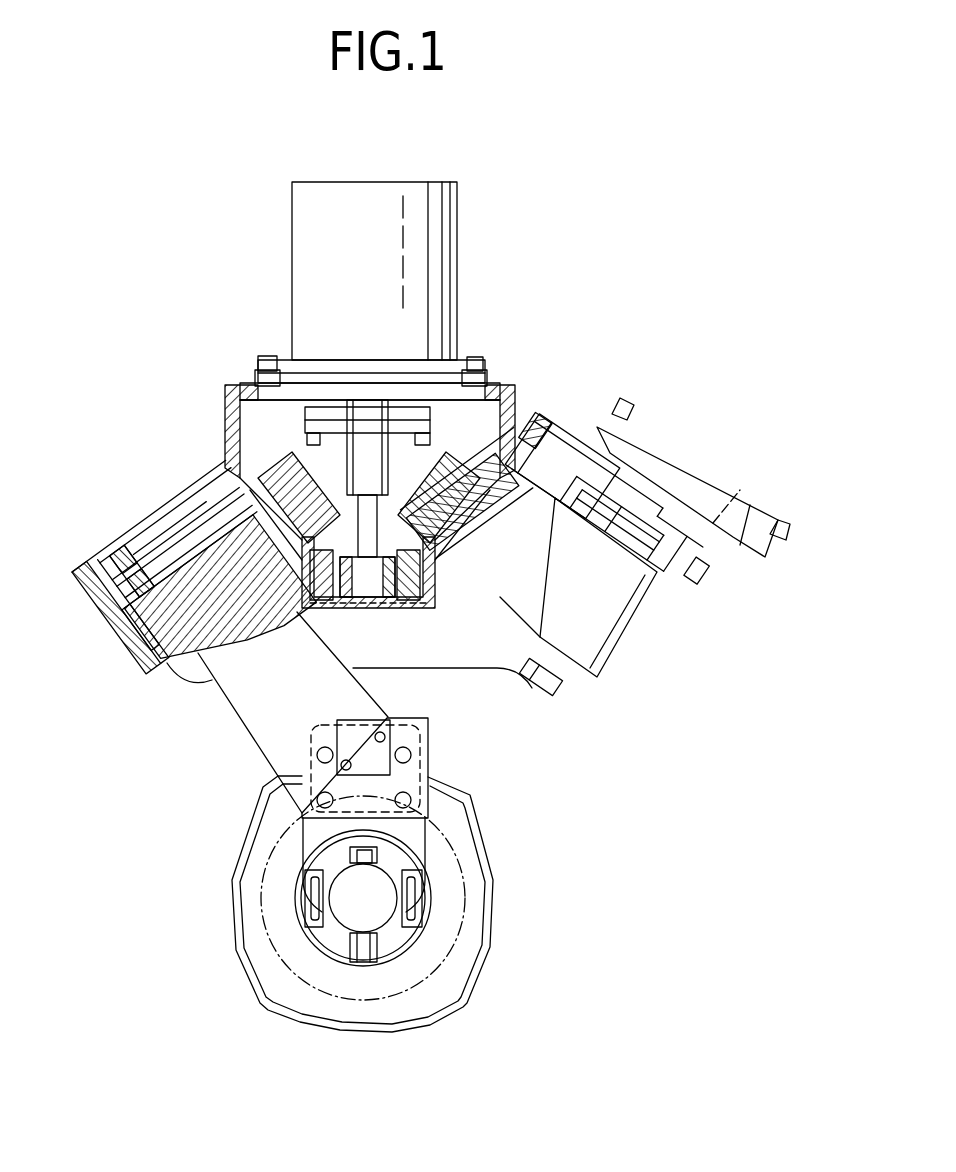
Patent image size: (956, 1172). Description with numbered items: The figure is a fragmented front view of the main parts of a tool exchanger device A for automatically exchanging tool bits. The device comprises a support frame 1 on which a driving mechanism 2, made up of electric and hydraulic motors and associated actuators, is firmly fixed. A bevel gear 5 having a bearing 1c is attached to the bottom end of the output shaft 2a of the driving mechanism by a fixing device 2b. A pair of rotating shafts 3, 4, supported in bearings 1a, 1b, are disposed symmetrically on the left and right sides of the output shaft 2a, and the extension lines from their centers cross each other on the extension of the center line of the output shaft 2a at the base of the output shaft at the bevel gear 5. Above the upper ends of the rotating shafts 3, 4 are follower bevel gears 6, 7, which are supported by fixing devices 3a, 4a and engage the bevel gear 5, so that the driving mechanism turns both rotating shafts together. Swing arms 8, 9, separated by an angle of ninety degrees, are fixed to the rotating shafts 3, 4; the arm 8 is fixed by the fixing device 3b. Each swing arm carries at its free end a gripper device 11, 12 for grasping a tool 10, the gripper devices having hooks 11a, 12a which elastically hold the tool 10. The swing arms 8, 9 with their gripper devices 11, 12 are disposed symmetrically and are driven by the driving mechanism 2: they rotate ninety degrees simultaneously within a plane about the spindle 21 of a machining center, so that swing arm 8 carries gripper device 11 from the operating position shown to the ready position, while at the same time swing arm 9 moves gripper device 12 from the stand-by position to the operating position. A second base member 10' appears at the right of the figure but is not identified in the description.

The tool exchanger device A is at (482, 190).
The support frame 1 is at (462, 670).
The bearing 1a is at (92, 572).
The bearing 1b is at (522, 440).
The bearing 1c is at (375, 608).
The driving mechanism 2 is at (448, 244).
The output shaft 2a is at (390, 440).
The fixing device 2b is at (400, 598).
The rotating shaft 3 is at (192, 548).
The fixing device 3a is at (292, 430).
The fixing device 3b is at (132, 575).
The rotating shaft 4 is at (490, 555).
The fixing device 4a is at (518, 408).
The bevel gear 5 is at (342, 440).
The follower bevel gear 6 is at (225, 410).
The follower bevel gear 7 is at (505, 402).
The swing arm 8 is at (247, 707).
The swing arm 9 is at (575, 562).
The tool 10 is at (394, 875).
The second base member 10' is at (700, 477).
The gripper device 11 is at (428, 835).
The hook 11a is at (326, 884).
The gripper device 12 is at (692, 590).
The hook 12a is at (412, 887).
The spindle 21 is at (398, 943).